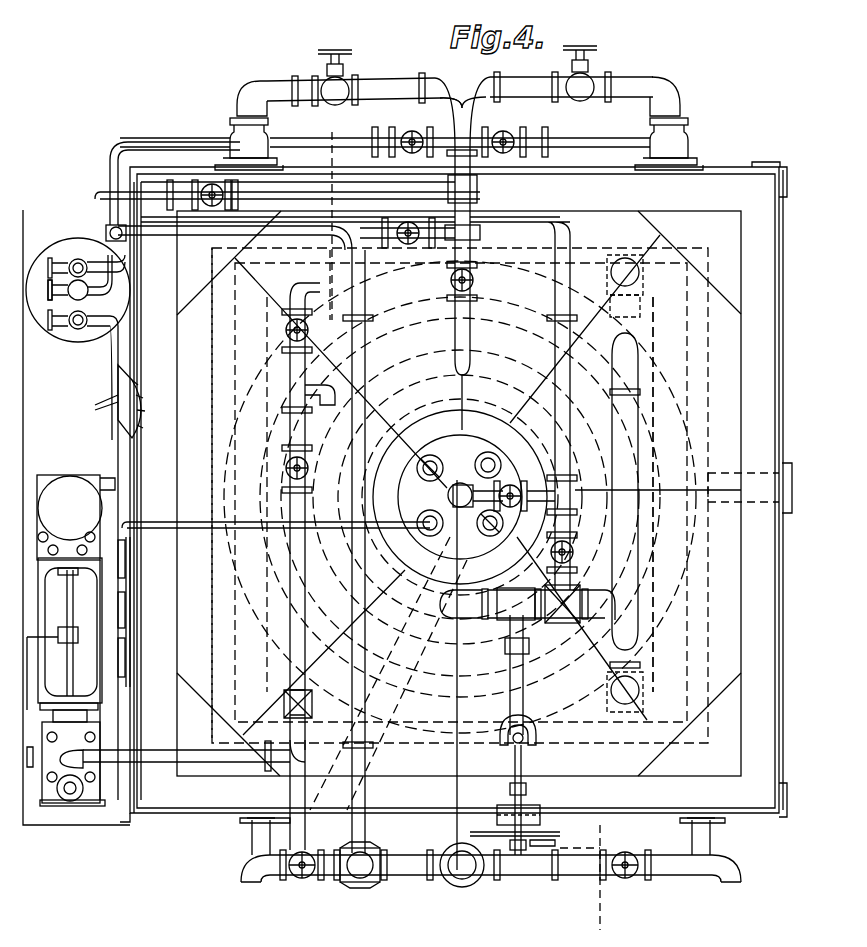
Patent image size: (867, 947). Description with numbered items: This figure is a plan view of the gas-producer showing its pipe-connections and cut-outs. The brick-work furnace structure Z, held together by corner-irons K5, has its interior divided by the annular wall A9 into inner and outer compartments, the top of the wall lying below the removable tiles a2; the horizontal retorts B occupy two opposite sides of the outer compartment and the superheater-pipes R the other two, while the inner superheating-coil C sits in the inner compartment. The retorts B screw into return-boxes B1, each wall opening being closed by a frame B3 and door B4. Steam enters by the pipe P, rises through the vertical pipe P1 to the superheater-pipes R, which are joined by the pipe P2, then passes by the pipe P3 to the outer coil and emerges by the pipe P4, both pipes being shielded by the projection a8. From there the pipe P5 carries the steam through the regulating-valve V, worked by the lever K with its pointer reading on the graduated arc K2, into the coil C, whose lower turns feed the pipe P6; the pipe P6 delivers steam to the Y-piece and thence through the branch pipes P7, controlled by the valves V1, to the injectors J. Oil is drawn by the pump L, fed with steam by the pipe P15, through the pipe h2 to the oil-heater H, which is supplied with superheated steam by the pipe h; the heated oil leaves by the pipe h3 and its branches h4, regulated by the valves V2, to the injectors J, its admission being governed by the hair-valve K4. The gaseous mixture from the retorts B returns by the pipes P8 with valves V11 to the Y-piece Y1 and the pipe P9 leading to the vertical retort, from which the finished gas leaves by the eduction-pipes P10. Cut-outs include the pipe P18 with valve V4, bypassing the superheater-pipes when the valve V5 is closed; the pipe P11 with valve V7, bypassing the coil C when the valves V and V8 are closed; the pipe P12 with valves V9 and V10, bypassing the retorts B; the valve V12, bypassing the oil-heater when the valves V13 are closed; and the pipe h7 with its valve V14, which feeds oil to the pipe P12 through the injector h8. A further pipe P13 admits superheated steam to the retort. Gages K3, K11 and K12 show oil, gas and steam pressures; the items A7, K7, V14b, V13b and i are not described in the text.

The corner-irons K5 is at (190, 166).
The return-boxes B1 is at (459, 489).
The horizontal retorts B is at (460, 495).
The brick-work furnace structure Z is at (767, 490).
The removable tiles a2 is at (442, 495).
The inner superheating-coil C is at (460, 497).
The eduction-pipes P10 is at (482, 460).
The valves in pipes h2 and h3 V13 is at (453, 487).
The pipe P13 is at (495, 505).
The valve V14 is at (509, 484).
The branch pipes P7 is at (458, 103).
The valves V1 is at (335, 60).
The regulating-valve V is at (454, 110).
The injectors J is at (459, 144).
The branch pipes h4 is at (385, 215).
The valves V2 is at (458, 130).
The pipe h3 is at (108, 160).
The pipe h is at (287, 234).
The injector h8 is at (298, 210).
The pipe h7 is at (235, 227).
The pipe P6 is at (470, 330).
The valve V9 is at (407, 242).
The valve V8 is at (470, 281).
The cut-out pipe P11 is at (483, 242).
The pipe P is at (347, 785).
The cut-out pipe P12 is at (372, 764).
The pipe P3 is at (305, 552).
The valve V5 is at (286, 330).
The pipe P5 is at (288, 388).
The valve V4 is at (286, 466).
The cut-out pipe P18 is at (288, 677).
The vertical pipe P1 is at (283, 705).
The pipe P15 is at (232, 760).
The pipe P9 is at (363, 714).
The superheater-pipes R is at (535, 500).
The pipe P2 is at (623, 543).
The valve V7 is at (572, 552).
The pipe P4 is at (546, 606).
The projection a8 is at (602, 594).
The annular wall A9 is at (490, 350).
The arc A7 is at (407, 663).
The hanger rod K7 is at (523, 762).
The graduated arc K2 is at (558, 834).
The lever K is at (580, 877).
The pipes P8 is at (491, 876).
The valves V11 is at (325, 579).
The valve V10 is at (382, 877).
The Y-piece Y1 is at (462, 873).
The door B4 is at (481, 837).
The frame B3 is at (468, 835).
The pipe h2 is at (195, 551).
The valve V12 is at (31, 292).
The valve V14b is at (48, 321).
The oil-heater H is at (60, 230).
The valve V13b is at (108, 230).
The hair-valve K4 is at (132, 382).
The pump casing i is at (37, 520).
The pump L is at (66, 682).
The gage K11 is at (128, 555).
The gage K12 is at (128, 590).
The gage K3 is at (128, 630).